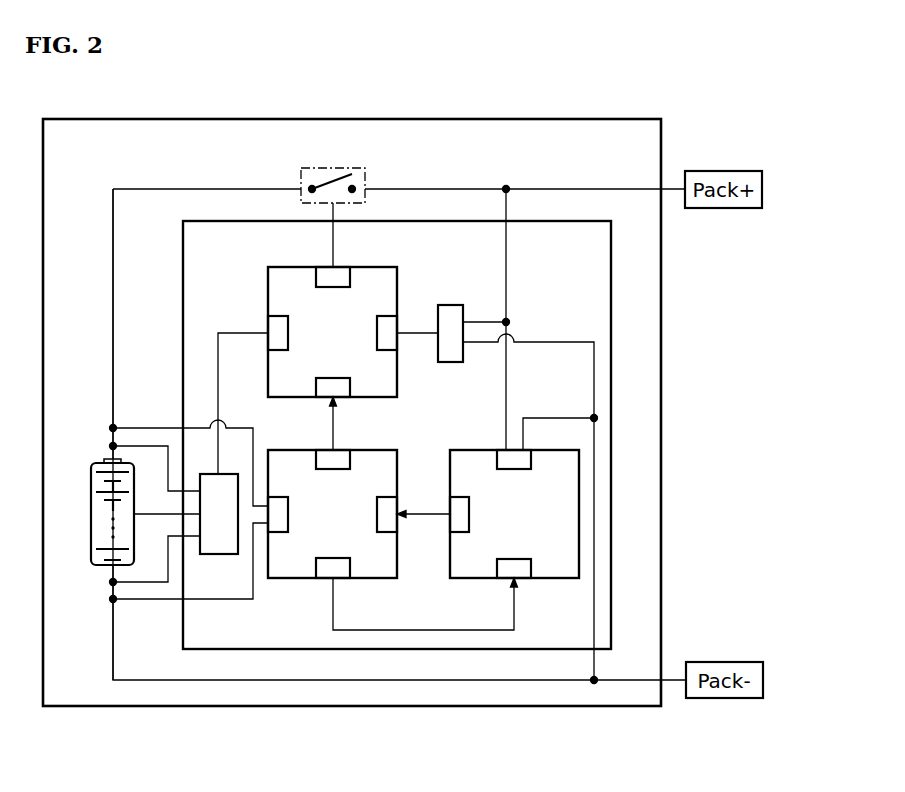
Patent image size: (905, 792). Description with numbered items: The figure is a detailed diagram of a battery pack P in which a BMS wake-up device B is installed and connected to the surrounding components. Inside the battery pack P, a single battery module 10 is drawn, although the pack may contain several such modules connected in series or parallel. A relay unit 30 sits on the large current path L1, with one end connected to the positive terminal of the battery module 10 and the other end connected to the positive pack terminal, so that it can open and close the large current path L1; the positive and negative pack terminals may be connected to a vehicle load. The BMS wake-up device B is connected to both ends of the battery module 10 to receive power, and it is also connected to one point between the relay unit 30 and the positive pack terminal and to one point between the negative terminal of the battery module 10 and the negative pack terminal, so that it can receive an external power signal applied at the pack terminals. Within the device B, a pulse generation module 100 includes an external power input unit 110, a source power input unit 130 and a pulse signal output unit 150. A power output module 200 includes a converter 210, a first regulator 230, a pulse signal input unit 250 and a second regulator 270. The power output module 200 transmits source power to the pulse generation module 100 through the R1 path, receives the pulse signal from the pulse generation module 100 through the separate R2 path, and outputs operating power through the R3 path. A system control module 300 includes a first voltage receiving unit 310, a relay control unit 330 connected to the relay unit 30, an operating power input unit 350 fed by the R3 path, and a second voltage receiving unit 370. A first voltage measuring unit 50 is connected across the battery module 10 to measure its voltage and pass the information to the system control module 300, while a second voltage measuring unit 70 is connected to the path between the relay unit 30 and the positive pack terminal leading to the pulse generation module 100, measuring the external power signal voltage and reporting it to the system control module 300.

The battery module 10 is at (91, 482).
The relay unit 30 is at (333, 168).
The first voltage measuring unit 50 is at (218, 554).
The second voltage measuring unit 70 is at (447, 305).
The pulse generation module 100 is at (465, 450).
The external power input unit 110 is at (516, 469).
The source power input unit 130 is at (516, 559).
The pulse signal output unit 150 is at (463, 497).
The power output module 200 is at (283, 450).
The converter 210 is at (281, 497).
The first regulator 230 is at (333, 558).
The pulse signal input unit 250 is at (383, 532).
The second regulator 270 is at (333, 469).
The system control module 300 is at (283, 267).
The first voltage receiving unit 310 is at (281, 316).
The relay control unit 330 is at (333, 288).
The operating power input unit 350 is at (333, 378).
The second voltage receiving unit 370 is at (383, 351).
The large current path L1 is at (165, 189).
The R1 path R1 is at (421, 630).
The R2 path R2 is at (427, 514).
The R3 path R3 is at (337, 432).
The battery pack P is at (588, 119).
The BMS wake-up device B is at (611, 258).